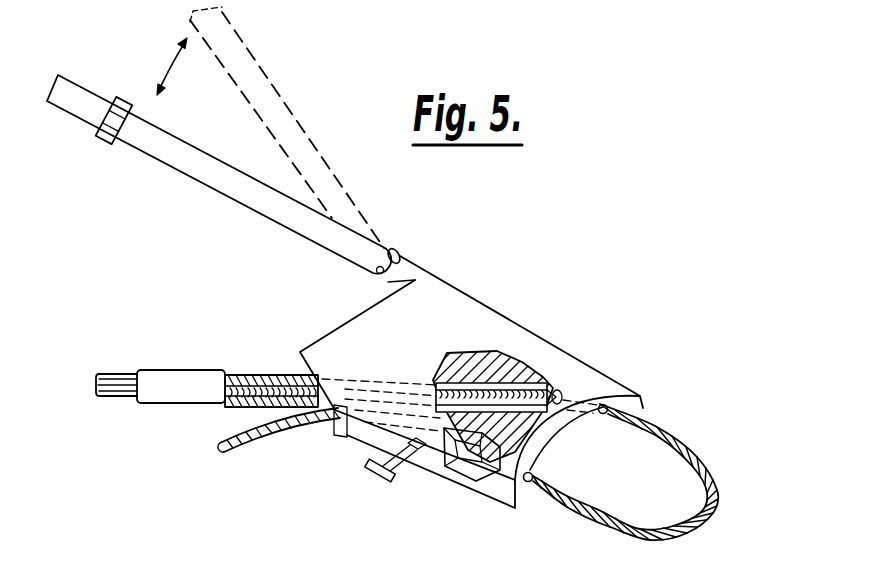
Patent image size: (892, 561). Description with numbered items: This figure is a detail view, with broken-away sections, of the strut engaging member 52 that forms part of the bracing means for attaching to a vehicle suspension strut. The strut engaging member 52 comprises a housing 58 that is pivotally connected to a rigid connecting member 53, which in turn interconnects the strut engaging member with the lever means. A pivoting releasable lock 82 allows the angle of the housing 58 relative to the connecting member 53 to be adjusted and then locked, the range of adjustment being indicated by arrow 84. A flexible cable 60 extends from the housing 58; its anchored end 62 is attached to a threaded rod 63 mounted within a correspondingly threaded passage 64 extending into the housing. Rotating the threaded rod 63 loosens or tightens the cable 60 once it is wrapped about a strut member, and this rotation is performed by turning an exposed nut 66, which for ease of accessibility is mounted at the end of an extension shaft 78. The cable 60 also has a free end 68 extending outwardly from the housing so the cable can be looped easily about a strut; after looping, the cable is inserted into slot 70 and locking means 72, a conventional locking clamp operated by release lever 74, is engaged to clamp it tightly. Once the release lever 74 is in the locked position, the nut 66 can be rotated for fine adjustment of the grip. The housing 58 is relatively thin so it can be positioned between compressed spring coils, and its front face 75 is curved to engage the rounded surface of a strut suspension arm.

The strut engaging member 52 is at (533, 245).
The rigid connecting member 53 is at (228, 190).
The housing 58 is at (507, 327).
The flexible cable 60 is at (692, 448).
The anchored end 62 is at (555, 382).
The threaded rod 63 is at (492, 392).
The threaded passage 64 is at (280, 377).
The exposed nut 66 is at (120, 372).
The free end 68 is at (262, 440).
The slot 70 is at (528, 484).
The locking means 72 is at (460, 478).
The release lever 74 is at (368, 470).
The front face 75 is at (560, 432).
The extension shaft 78 is at (193, 375).
The pivoting releasable lock 82 is at (394, 250).
The arrow 84 is at (172, 56).